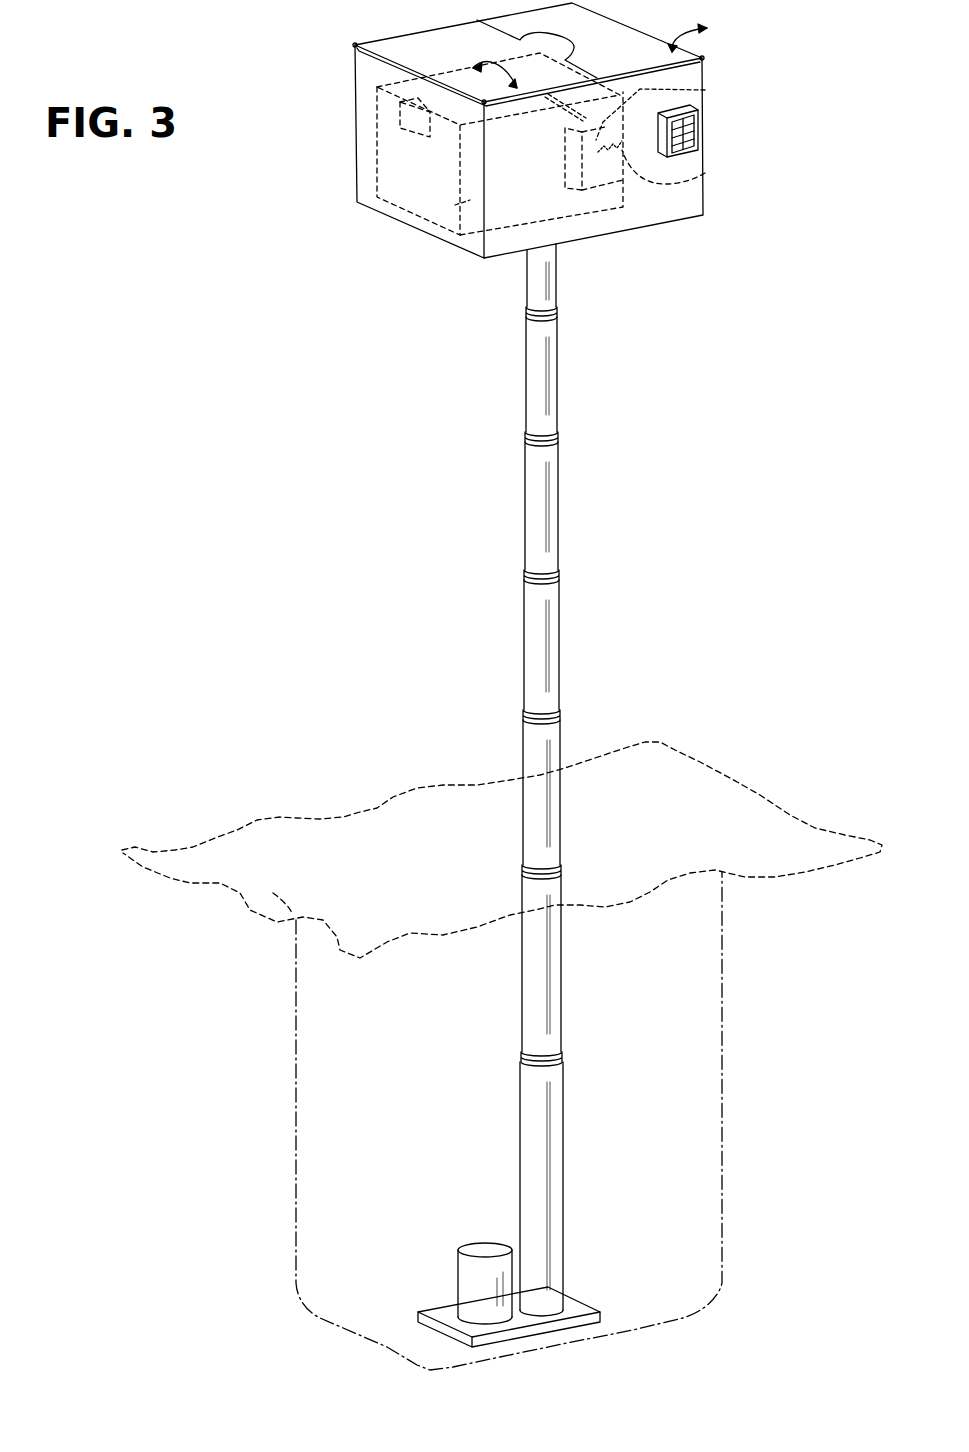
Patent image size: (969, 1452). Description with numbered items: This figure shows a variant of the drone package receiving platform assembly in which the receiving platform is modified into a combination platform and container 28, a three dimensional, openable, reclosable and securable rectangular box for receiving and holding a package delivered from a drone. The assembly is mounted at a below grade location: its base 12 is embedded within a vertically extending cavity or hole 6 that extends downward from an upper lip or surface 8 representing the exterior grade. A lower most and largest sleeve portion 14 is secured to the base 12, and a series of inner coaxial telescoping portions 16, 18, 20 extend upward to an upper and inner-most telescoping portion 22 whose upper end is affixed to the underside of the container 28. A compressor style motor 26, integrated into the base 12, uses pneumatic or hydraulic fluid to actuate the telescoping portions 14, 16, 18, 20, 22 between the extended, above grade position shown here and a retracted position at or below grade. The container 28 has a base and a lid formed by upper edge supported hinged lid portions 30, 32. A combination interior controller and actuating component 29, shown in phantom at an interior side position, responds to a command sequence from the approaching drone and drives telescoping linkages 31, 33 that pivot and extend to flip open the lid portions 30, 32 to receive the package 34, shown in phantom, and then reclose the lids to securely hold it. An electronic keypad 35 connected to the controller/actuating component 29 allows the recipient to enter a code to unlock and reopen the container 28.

The hole 6 is at (322, 1104).
The upper lip or surface 8 is at (172, 883).
The base 12 is at (437, 1310).
The lower most and largest sleeve portion 14 is at (563, 1148).
The telescoping portion 16 is at (522, 990).
The telescoping portion 18 is at (560, 838).
The telescoping portion 20 is at (524, 648).
The upper and inner-most telescoping portion 22 is at (558, 286).
The compressor style motor 26 is at (480, 1252).
The combination platform and container 28 is at (362, 210).
The combination interior controller and actuating component 29 is at (705, 173).
The hinged lid portion 30 is at (397, 42).
The telescoping linkage 31 is at (565, 120).
The hinged lid portion 32 is at (623, 33).
The telescoping linkage 33 is at (705, 90).
The package 34 is at (470, 200).
The electronic keypad 35 is at (700, 123).